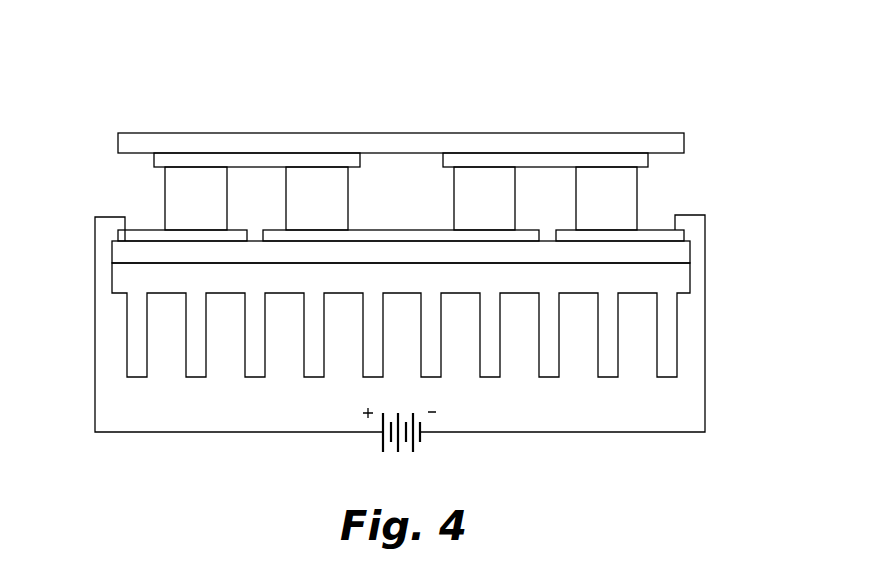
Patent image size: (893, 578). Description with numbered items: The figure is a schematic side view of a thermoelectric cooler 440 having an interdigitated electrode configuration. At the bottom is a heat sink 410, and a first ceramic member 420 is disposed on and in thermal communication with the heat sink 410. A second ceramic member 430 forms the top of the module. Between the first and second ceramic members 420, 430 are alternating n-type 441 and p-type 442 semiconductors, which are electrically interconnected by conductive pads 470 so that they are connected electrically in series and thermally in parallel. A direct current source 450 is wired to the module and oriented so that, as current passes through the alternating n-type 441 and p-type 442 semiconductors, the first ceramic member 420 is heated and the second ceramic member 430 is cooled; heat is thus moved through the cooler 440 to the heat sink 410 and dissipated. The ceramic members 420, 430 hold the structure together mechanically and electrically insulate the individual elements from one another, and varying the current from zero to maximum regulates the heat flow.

The thermoelectric cooler 440 is at (675, 88).
The second ceramic member 430 is at (602, 142).
The conductive pads 470 is at (253, 160).
The n-type semiconductor 441 is at (165, 180).
The p-type semiconductor 442 is at (638, 204).
The first ceramic member 420 is at (683, 253).
The heat sink 410 is at (122, 278).
The direct current source 450 is at (382, 438).